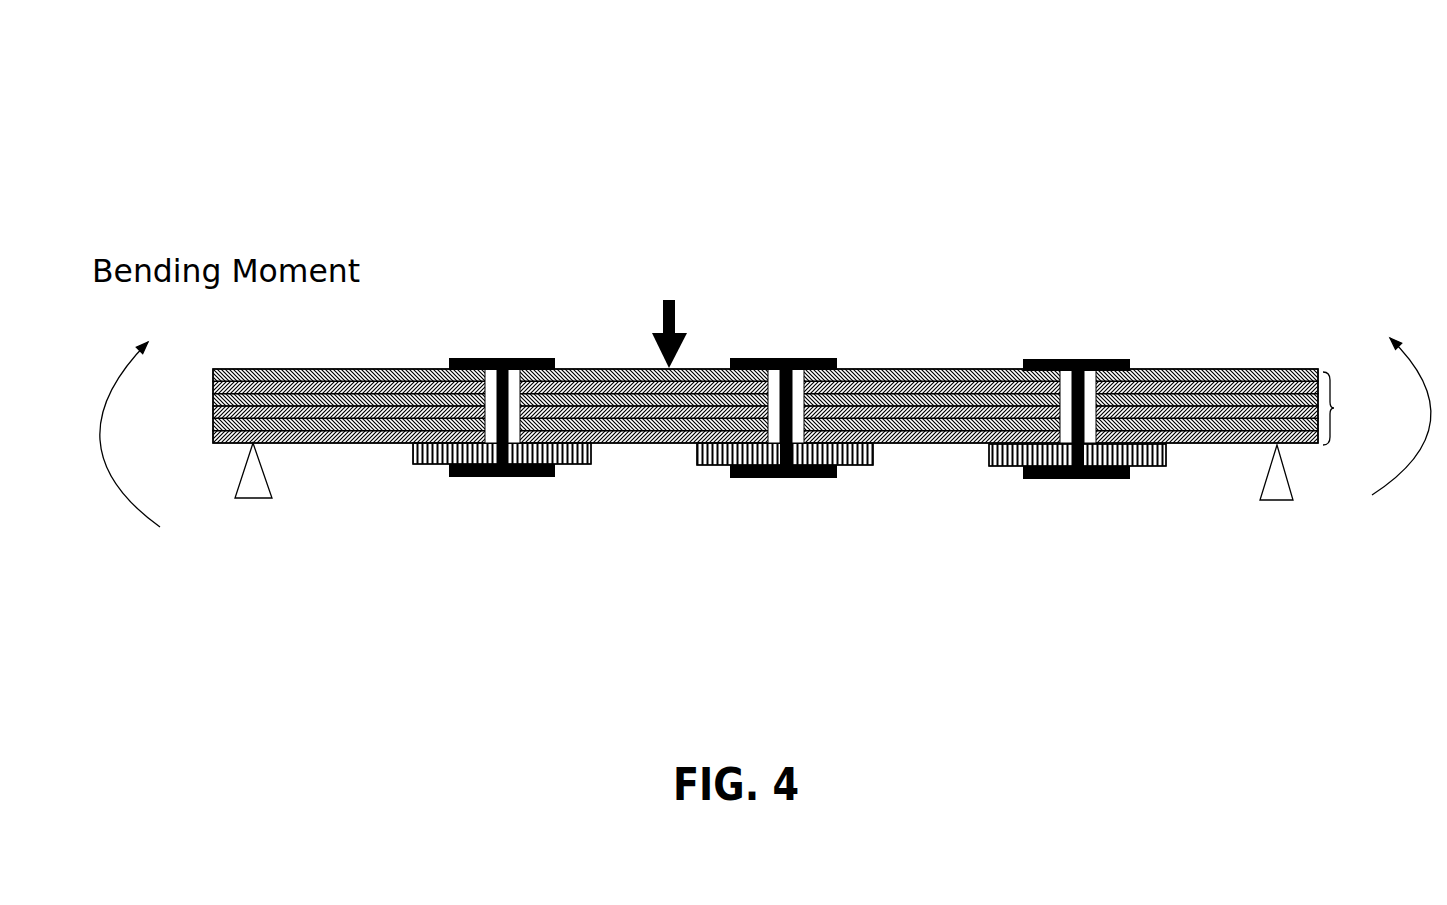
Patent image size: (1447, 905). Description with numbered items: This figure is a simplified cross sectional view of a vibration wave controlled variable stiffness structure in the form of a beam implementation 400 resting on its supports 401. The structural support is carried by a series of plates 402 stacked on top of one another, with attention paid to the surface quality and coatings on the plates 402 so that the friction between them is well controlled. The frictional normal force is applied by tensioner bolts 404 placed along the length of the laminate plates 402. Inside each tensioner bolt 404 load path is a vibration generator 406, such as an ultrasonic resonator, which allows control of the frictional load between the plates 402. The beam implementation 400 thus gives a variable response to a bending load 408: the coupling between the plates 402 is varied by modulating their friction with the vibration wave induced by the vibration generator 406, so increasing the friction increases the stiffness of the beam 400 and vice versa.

The beam implementation 400 is at (329, 101).
The supports 401 is at (272, 498).
The plates 402 is at (1334, 408).
The tensioner bolts 404 is at (498, 357).
The vibration generator 406 is at (432, 465).
The bending load 408 is at (675, 305).